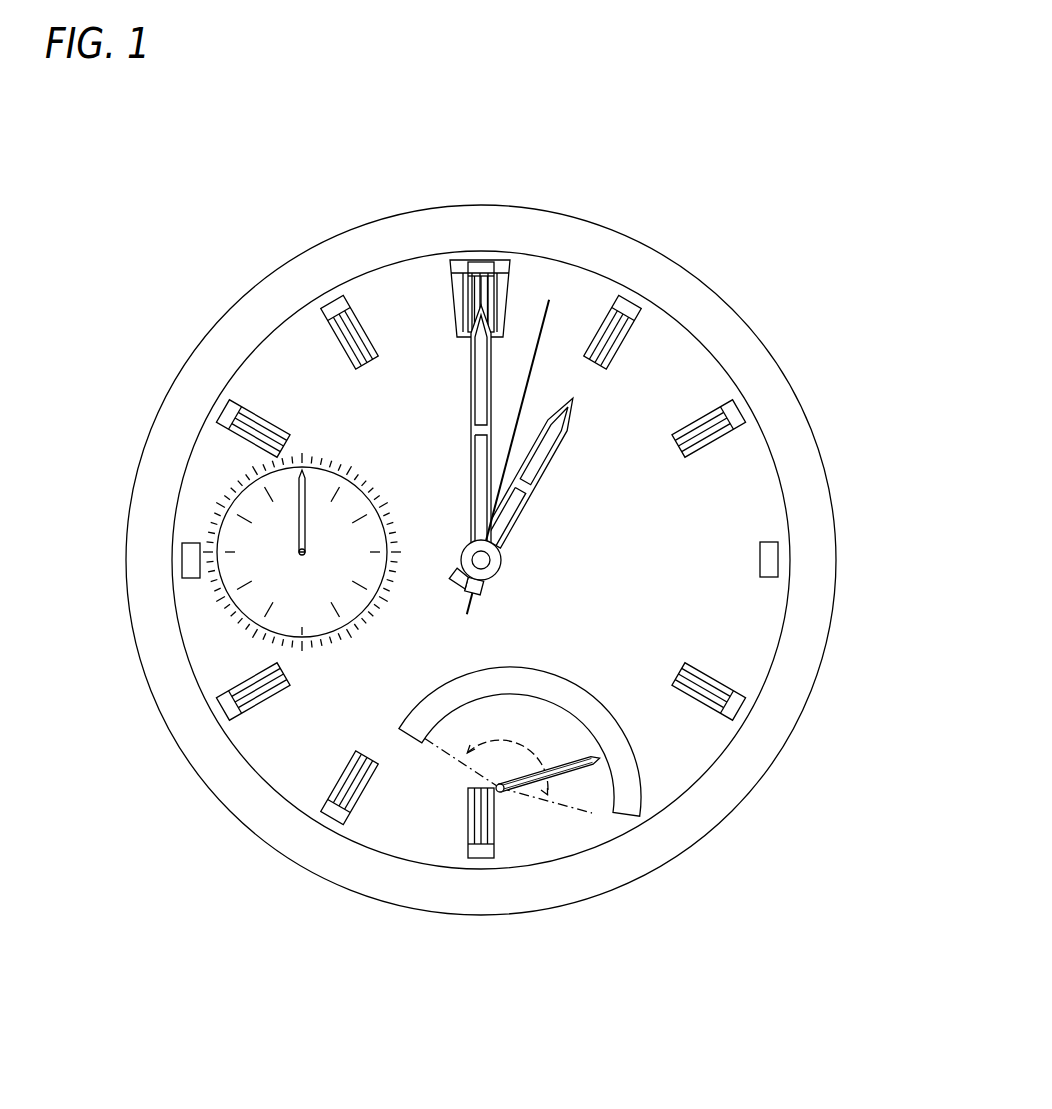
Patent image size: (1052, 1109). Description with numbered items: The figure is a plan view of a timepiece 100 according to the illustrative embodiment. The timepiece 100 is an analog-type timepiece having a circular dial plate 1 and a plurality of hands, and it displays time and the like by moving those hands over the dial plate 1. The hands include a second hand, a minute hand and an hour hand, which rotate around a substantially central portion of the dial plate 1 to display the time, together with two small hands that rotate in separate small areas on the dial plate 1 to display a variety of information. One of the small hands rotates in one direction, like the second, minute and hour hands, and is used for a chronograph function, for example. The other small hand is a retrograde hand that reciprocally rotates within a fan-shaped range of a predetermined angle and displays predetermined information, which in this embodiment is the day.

The timepiece 100 is at (583, 142).
The dial plate 1 is at (660, 533).